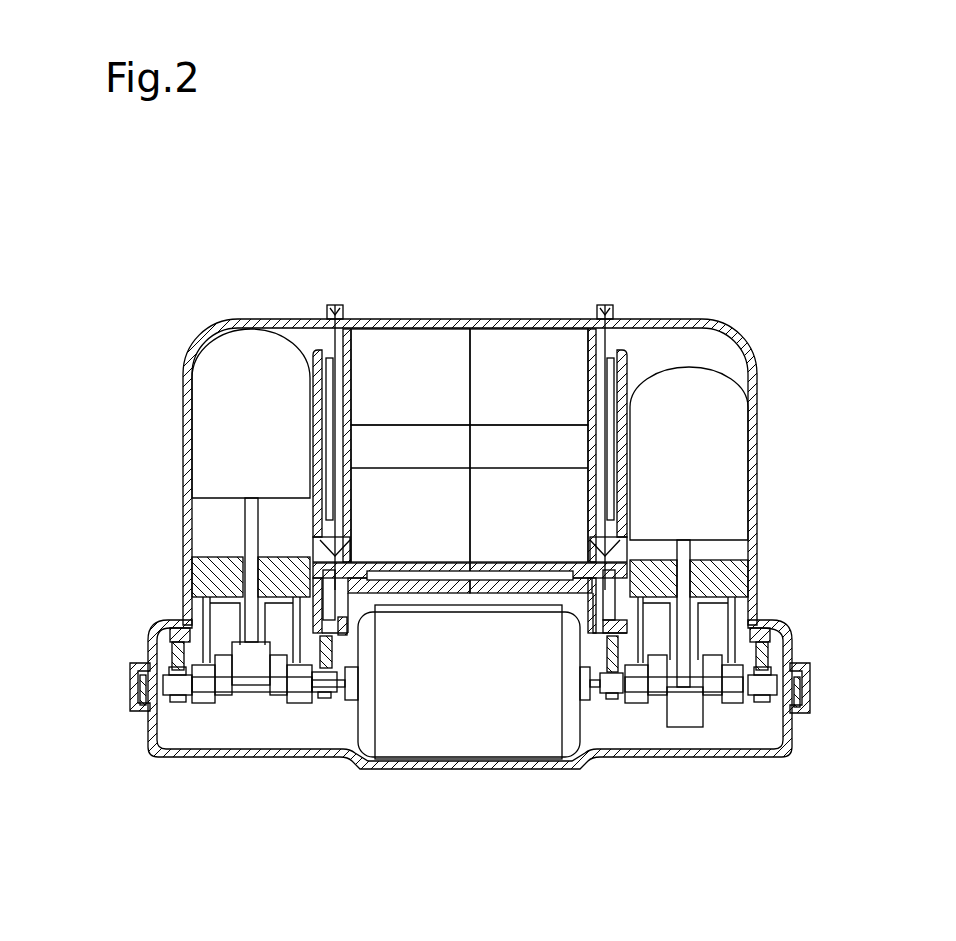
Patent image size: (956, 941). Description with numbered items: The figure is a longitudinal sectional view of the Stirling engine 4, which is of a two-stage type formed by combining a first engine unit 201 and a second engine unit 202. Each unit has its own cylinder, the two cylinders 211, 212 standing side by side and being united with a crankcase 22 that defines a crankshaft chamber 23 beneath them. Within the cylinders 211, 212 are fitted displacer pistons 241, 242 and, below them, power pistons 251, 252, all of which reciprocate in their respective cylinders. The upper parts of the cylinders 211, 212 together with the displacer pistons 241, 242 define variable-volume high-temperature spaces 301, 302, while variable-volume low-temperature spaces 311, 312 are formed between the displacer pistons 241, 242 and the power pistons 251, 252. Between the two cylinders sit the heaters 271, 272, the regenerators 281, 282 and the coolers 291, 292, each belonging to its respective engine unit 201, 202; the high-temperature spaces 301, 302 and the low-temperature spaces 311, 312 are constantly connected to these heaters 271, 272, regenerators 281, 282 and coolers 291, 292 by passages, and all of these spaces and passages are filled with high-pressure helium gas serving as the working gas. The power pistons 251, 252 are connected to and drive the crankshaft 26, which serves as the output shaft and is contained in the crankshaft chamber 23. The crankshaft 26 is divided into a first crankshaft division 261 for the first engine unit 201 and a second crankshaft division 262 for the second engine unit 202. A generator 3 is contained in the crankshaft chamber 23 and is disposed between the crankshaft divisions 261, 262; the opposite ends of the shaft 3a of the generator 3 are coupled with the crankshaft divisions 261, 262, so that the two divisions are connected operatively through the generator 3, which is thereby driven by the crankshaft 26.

The Stirling engine 4 is at (650, 196).
The first engine unit 201 is at (206, 306).
The second engine unit 202 is at (724, 290).
The first cylinder 211 is at (186, 467).
The second cylinder 212 is at (750, 440).
The crankcase 22 is at (153, 733).
The crankshaft chamber 23 is at (303, 728).
The first displacer piston 241 is at (212, 405).
The second displacer piston 242 is at (713, 410).
The first power piston 251 is at (203, 581).
The second power piston 252 is at (717, 582).
The crankshaft 26 is at (470, 748).
The first crankshaft division 261 is at (178, 683).
The second crankshaft division 262 is at (617, 683).
The first heater 271 is at (409, 347).
The second heater 272 is at (524, 348).
The first regenerator 281 is at (400, 447).
The second regenerator 282 is at (528, 447).
The first cooler 291 is at (410, 530).
The second cooler 292 is at (522, 547).
The first high-temperature space 301 is at (297, 337).
The second high-temperature space 302 is at (717, 357).
The first low-temperature space 311 is at (217, 527).
The second low-temperature space 312 is at (730, 550).
The generator 3 is at (466, 718).
The shaft of the generator 3a is at (340, 690).